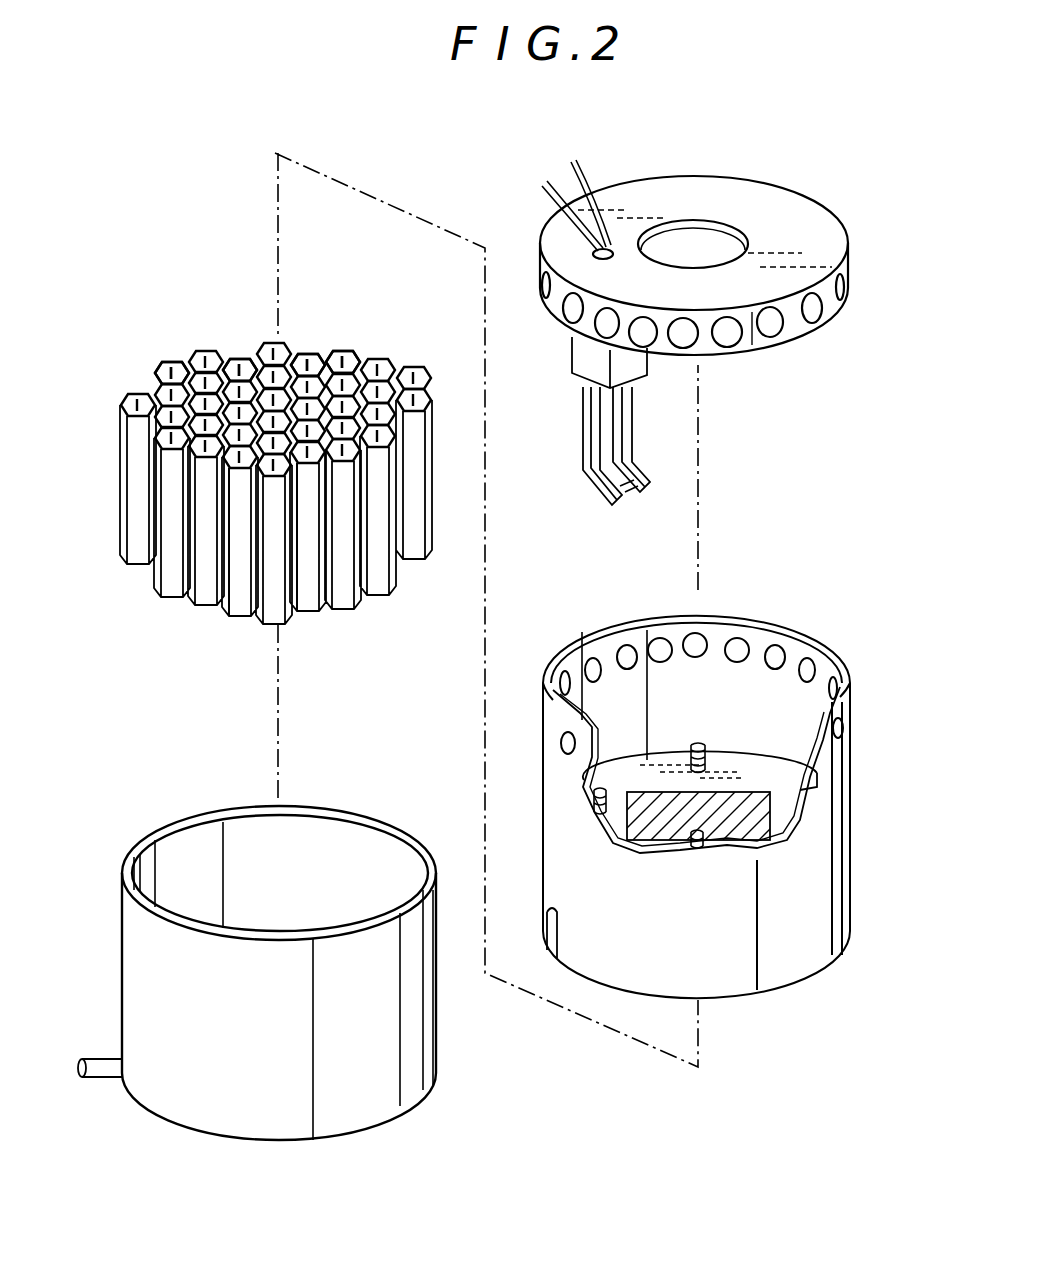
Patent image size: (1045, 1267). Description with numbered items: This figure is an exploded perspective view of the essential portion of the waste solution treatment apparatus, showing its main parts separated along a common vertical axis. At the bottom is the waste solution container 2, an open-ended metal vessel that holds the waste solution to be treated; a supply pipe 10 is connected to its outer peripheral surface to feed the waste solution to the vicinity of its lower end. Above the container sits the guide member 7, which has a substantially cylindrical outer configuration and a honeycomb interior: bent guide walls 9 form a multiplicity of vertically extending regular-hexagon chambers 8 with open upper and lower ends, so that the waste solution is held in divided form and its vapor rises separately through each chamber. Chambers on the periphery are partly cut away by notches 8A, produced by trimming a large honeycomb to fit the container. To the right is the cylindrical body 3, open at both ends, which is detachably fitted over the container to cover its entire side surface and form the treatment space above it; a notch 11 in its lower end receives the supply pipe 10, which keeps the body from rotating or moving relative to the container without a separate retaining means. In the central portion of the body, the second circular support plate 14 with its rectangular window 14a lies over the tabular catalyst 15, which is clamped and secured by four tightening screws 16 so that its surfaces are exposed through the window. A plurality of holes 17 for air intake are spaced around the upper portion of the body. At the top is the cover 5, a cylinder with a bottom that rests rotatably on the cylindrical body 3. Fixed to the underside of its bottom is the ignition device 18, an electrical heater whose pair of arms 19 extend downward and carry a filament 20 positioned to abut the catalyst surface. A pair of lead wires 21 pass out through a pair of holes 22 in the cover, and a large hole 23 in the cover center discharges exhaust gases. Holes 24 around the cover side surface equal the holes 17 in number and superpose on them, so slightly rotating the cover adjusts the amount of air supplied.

The waste solution container 2 is at (257, 998).
The cylindrical body 3 is at (703, 802).
The cover 5 is at (699, 261).
The guide member 7 is at (405, 348).
The chambers 8 is at (238, 362).
The notches 8A is at (300, 560).
The guide walls 9 is at (342, 357).
The supply pipe 10 is at (105, 1080).
The notch 11 is at (550, 940).
The second circular support plate 14 is at (730, 762).
The rectangular window 14a is at (756, 790).
The catalyst 15 is at (753, 812).
The tightening screws 16 is at (696, 745).
The holes 17 is at (846, 733).
The ignition device 18 is at (573, 375).
The arms 19 is at (628, 430).
The filament 20 is at (626, 492).
The lead wires 21 is at (590, 180).
The holes 22 is at (598, 253).
The large hole 23 is at (705, 222).
The holes 24 is at (812, 322).